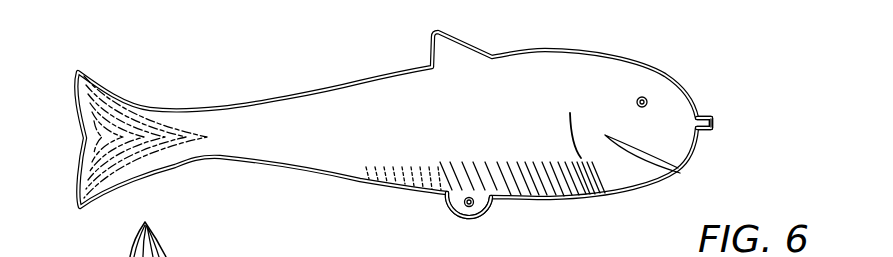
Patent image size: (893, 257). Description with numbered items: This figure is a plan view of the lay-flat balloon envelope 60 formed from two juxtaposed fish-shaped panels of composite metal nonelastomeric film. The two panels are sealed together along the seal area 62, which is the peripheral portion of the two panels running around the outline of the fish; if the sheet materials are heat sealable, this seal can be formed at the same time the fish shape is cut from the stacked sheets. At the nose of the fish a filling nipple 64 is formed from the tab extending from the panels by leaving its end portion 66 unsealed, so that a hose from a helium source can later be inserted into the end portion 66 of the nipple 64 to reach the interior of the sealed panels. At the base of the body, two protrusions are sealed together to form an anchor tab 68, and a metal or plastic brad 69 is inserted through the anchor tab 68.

The fish-shaped lure body 60 is at (577, 72).
The seal area 62 is at (308, 97).
The filling nipple 64 is at (708, 118).
The end portion 66 is at (713, 127).
The anchor tab 68 is at (455, 207).
The brad 69 is at (474, 205).